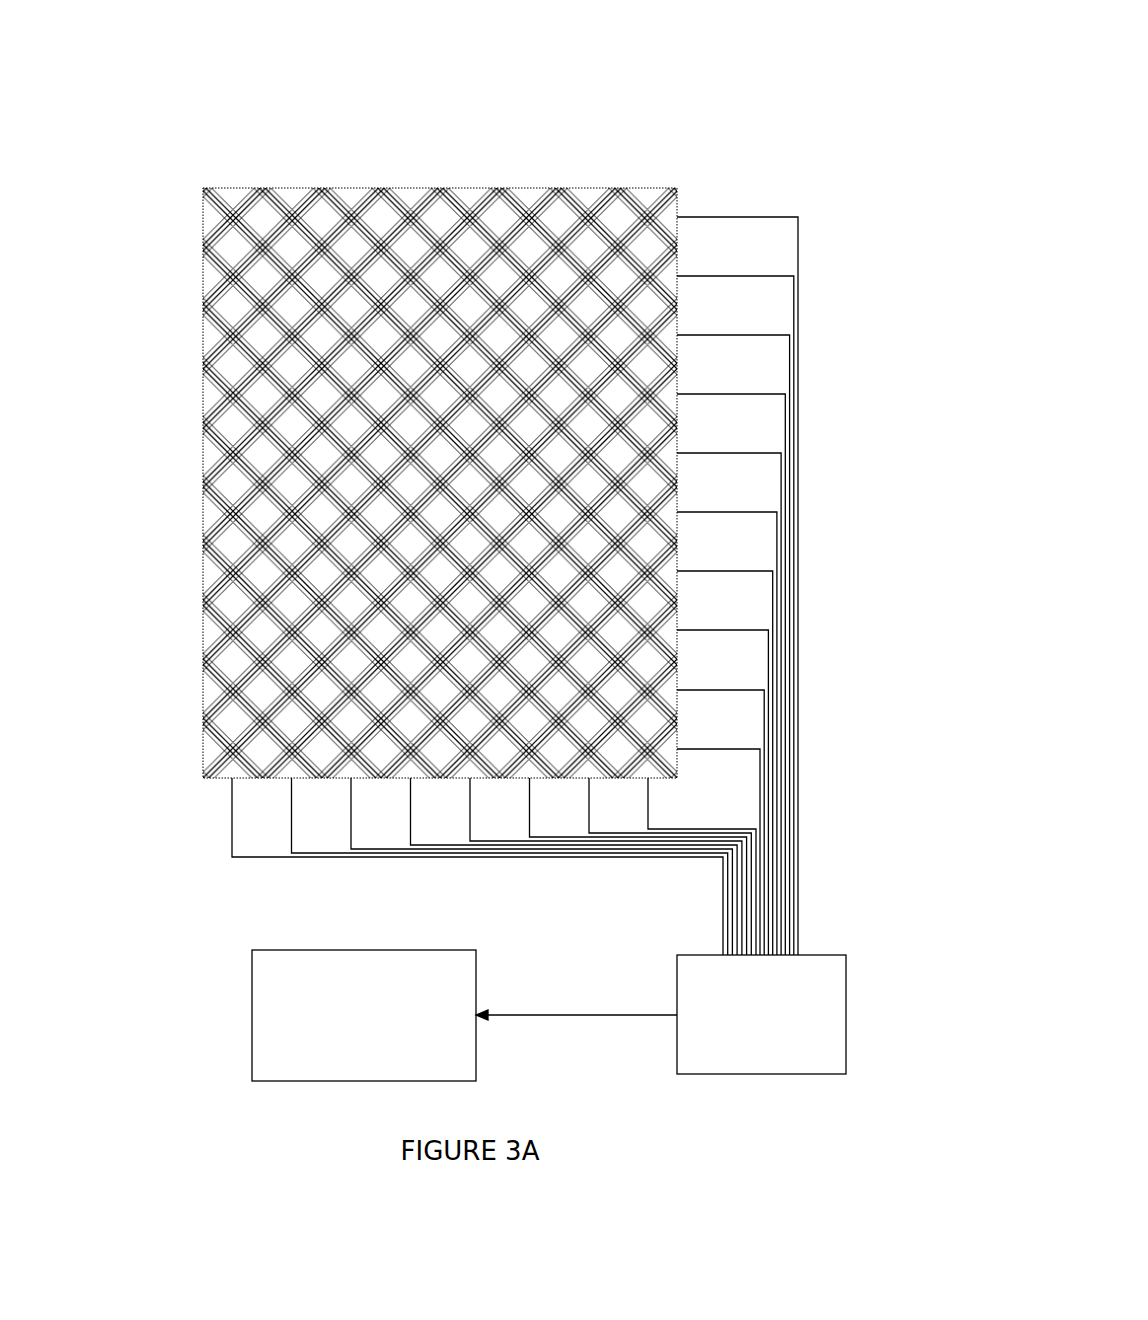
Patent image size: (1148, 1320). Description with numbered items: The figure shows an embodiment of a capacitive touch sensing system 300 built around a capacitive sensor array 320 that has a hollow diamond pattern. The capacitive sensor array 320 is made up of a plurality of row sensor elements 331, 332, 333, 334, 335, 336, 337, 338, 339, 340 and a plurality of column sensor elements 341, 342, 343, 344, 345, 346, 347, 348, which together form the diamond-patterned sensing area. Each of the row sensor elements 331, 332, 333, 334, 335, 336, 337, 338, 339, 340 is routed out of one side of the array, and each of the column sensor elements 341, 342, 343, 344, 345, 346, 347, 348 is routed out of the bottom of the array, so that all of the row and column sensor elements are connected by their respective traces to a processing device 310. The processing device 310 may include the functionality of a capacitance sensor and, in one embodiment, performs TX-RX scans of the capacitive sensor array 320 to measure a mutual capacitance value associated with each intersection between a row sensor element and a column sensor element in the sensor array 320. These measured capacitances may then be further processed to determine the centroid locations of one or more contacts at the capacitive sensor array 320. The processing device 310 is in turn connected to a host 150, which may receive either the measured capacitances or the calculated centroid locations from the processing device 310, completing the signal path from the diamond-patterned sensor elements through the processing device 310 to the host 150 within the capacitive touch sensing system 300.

The capacitive touch sensing system 300 is at (276, 100).
The capacitive sensor array 320 is at (680, 88).
The processing device 310 is at (761, 1014).
The host 150 is at (364, 1015).
The row sensor element 331 is at (718, 838).
The row sensor element 332 is at (720, 808).
The row sensor element 333 is at (722, 778).
The row sensor element 334 is at (725, 749).
The row sensor element 335 is at (727, 719).
The row sensor element 336 is at (729, 690).
The row sensor element 337 is at (731, 660).
The row sensor element 338 is at (733, 631).
The row sensor element 339 is at (735, 601).
The row sensor element 340 is at (737, 572).
The column sensor element 341 is at (702, 866).
The column sensor element 342 is at (670, 866).
The column sensor element 343 is at (638, 866).
The column sensor element 344 is at (606, 866).
The column sensor element 345 is at (574, 866).
The column sensor element 346 is at (541, 866).
The column sensor element 347 is at (510, 866).
The column sensor element 348 is at (477, 866).